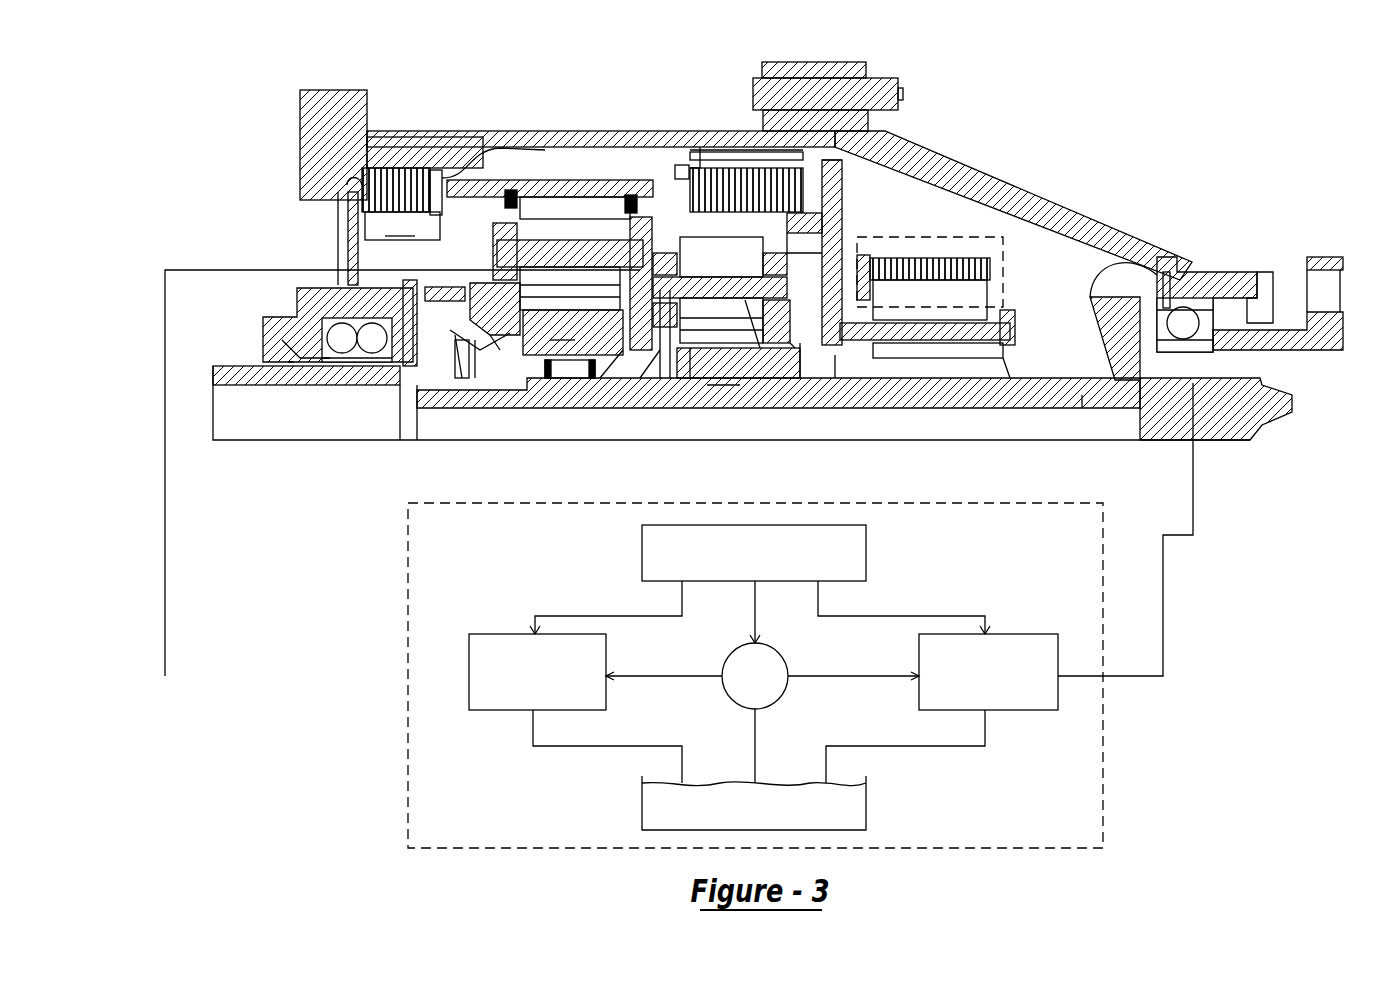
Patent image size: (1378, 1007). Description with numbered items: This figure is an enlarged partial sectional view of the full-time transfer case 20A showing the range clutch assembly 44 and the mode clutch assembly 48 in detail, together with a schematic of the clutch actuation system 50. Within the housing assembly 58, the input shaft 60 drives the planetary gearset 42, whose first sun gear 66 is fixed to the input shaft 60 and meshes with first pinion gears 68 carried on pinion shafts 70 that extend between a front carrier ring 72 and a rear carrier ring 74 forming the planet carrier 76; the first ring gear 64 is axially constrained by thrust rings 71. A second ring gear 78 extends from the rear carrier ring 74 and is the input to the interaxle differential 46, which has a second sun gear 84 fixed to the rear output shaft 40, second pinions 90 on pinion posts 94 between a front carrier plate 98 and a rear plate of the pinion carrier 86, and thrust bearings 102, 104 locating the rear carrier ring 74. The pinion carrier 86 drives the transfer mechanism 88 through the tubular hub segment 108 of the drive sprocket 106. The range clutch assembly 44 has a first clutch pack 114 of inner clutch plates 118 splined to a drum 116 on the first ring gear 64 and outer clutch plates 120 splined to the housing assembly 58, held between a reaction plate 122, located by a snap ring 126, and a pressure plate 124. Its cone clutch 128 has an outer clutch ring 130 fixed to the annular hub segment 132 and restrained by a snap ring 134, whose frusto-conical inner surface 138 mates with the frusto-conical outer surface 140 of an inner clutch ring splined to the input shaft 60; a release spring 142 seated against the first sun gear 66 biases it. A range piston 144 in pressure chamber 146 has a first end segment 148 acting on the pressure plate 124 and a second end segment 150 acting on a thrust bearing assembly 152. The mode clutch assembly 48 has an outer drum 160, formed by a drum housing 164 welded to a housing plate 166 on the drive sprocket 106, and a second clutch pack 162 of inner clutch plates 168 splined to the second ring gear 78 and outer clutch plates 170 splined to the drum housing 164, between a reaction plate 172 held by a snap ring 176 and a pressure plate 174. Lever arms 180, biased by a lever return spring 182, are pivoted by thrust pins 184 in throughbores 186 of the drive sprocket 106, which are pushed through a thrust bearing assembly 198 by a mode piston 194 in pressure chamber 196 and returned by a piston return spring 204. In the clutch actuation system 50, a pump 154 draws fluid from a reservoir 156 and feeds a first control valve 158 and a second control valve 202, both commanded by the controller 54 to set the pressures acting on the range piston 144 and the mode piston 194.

The full-time transfer case 20A is at (759, 352).
The rear output shaft 40 is at (1270, 398).
The planetary gearset 42 is at (562, 131).
The range clutch assembly 44 is at (322, 349).
The interaxle differential 46 is at (745, 320).
The mode clutch assembly 48 is at (700, 147).
The clutch actuation system 50 is at (780, 661).
The controller 54 is at (866, 545).
The housing assembly 58 is at (1085, 208).
The input shaft 60 is at (235, 372).
The first ring gear 64 is at (572, 190).
The first sun gear 66 is at (573, 332).
The first pinion gears 68 is at (548, 207).
The pinion shaft 70 is at (570, 275).
The thrust rings 71 is at (508, 192).
The front carrier ring 72 is at (497, 230).
The rear carrier ring 74 is at (665, 378).
The planet carrier 76 is at (628, 196).
The second ring gear 78 is at (830, 228).
The second sun gear 84 is at (730, 339).
The pinion carrier 86 is at (802, 378).
The transfer mechanism 88 is at (1012, 300).
The second pinions 90 is at (790, 350).
The pinion posts 94 is at (721, 308).
The front carrier plate 98 is at (650, 235).
The thrust bearing 102 is at (650, 378).
The thrust bearing 104 is at (692, 370).
The drive sprocket 106 is at (955, 262).
The tubular hub segment 108 is at (837, 380).
The first clutch pack 114 is at (395, 185).
The drum 116 is at (402, 225).
The inner clutch plates 118 is at (348, 215).
The outer clutch plates 120 is at (440, 160).
The reaction plate 122 is at (445, 172).
The pressure plate 124 is at (378, 165).
The snap ring 126 is at (505, 148).
The cone clutch 128 is at (465, 378).
The outer clutch ring 130 is at (480, 342).
The annular hub segment 132 is at (472, 288).
The snap ring 134 is at (428, 290).
The frusto-conical inner surface 138 is at (495, 350).
The frusto-conical outer surface 140 is at (478, 378).
The release spring 142 is at (572, 378).
The range piston 144 is at (340, 260).
The pressure chamber 146 is at (348, 190).
The first end segment 148 is at (340, 140).
The second end segment 150 is at (348, 358).
The thrust bearing assembly 152 is at (403, 370).
The pump 154 is at (732, 660).
The reservoir 156 is at (866, 812).
The first control valve 158 is at (492, 625).
The outer drum 160 is at (822, 80).
The second clutch pack 162 is at (705, 156).
The drum housing 164 is at (770, 128).
The housing plate 166 is at (845, 190).
The inner clutch plates 168 is at (718, 240).
The outer clutch plates 170 is at (720, 185).
The reaction plate 172 is at (678, 175).
The pressure plate 174 is at (840, 165).
The snap ring 176 is at (695, 152).
The lever arms 180 is at (930, 289).
The lever return spring 182 is at (868, 258).
The thrust pins 184 is at (1010, 310).
The throughbores 186 is at (900, 358).
The mode piston 194 is at (1160, 265).
The pressure chamber 196 is at (1192, 290).
The thrust bearing assembly 198 is at (1005, 378).
The second control valve 202 is at (1025, 712).
The piston return spring 204 is at (1072, 415).